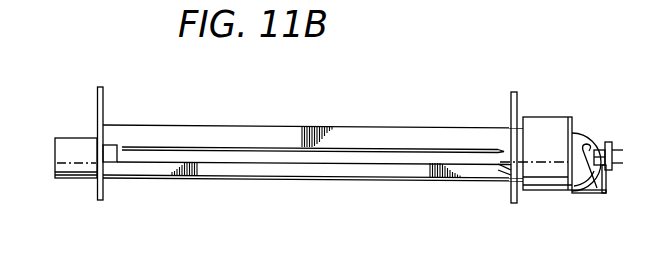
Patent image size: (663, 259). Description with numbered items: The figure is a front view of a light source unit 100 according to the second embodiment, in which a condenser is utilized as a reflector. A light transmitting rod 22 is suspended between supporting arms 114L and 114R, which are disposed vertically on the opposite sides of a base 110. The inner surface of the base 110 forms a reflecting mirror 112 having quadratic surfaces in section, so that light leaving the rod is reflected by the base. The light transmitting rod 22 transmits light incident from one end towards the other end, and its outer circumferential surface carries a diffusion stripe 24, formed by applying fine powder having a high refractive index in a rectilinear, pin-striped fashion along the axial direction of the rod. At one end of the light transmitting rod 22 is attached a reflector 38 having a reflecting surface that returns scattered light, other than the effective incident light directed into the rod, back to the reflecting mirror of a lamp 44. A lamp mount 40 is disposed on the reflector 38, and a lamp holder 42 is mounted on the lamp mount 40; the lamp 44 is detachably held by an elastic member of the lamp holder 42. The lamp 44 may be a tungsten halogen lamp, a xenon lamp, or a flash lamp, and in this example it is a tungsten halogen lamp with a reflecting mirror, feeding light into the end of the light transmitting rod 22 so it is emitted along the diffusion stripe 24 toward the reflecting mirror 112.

The light source unit 100 is at (297, 103).
The base 110 is at (408, 126).
The reflecting mirror 112 is at (343, 136).
The light transmitting rod 22 is at (342, 158).
The diffusion stripe 24 is at (267, 151).
The reflector 38 is at (500, 174).
The lamp mount 40 is at (549, 180).
The lamp holder 42 is at (608, 187).
The lamp 44 is at (577, 134).
The supporting arm 114L is at (97, 101).
The supporting arm 114R is at (517, 101).